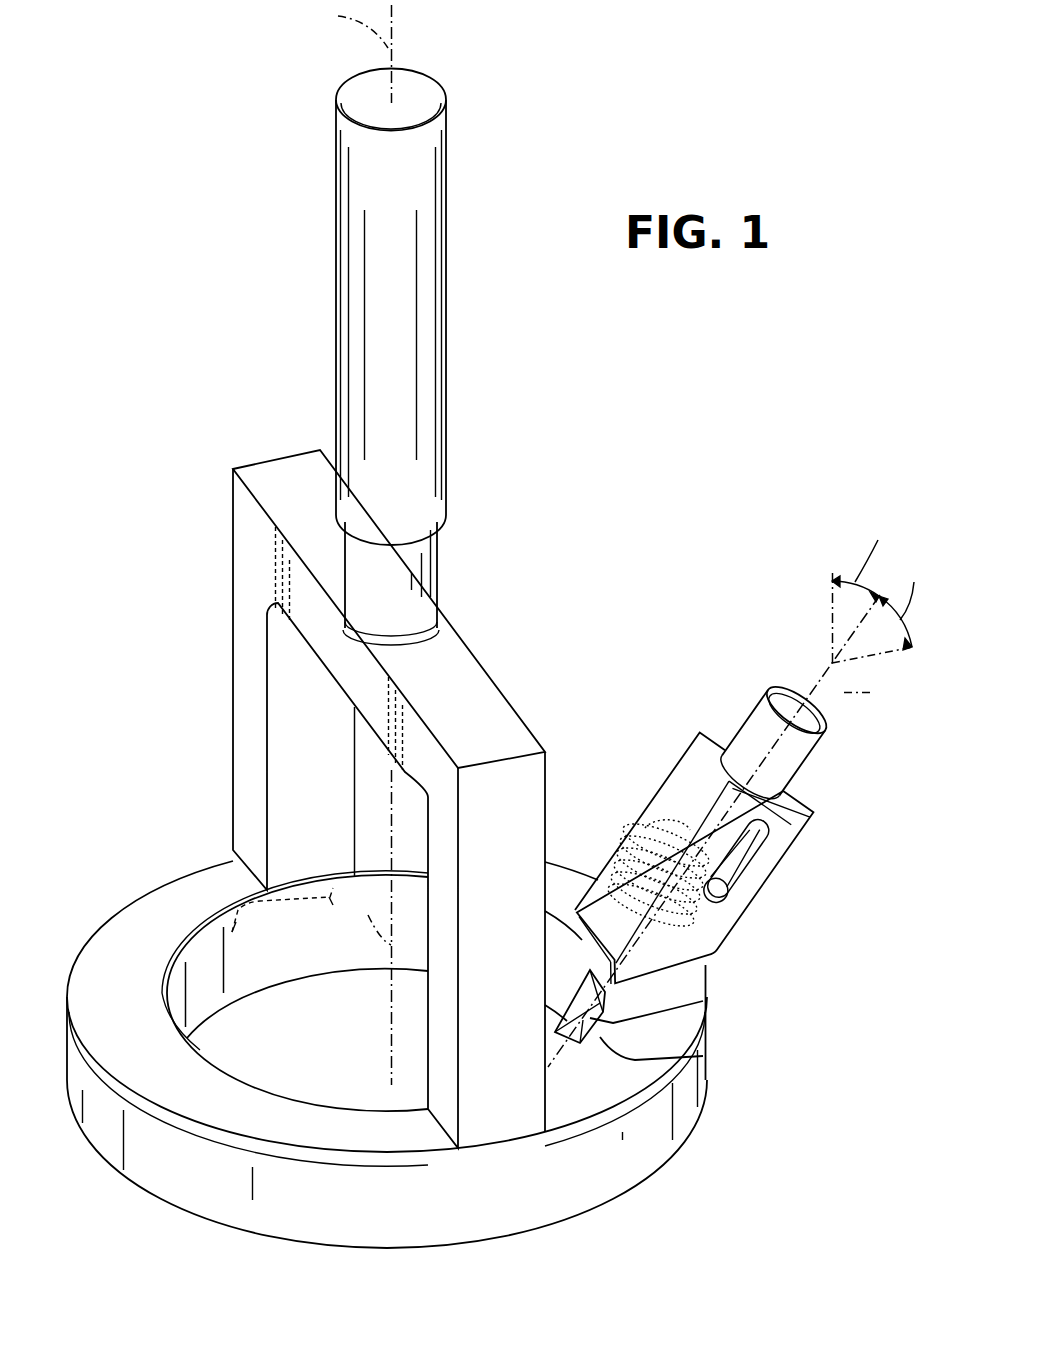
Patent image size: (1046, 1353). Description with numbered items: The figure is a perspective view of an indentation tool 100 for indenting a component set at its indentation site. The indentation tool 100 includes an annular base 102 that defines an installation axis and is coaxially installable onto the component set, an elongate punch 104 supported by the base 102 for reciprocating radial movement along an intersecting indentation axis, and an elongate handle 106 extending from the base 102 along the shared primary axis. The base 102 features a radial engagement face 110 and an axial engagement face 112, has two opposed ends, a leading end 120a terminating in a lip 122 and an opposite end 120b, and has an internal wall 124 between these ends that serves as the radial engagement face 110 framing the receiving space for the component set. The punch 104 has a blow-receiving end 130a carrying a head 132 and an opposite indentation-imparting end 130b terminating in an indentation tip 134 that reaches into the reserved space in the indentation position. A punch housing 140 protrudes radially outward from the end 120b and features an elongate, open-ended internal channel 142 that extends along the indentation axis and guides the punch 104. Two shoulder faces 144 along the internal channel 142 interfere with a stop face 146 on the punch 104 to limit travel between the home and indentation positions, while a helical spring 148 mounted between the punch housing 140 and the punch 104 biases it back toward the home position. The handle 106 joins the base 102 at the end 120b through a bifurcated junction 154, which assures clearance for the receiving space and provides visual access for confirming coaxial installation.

The indentation tool 100 is at (341, 182).
The base 102 is at (108, 965).
The punch 104 is at (750, 735).
The handle 106 is at (336, 322).
The radial engagement face 110 is at (222, 982).
The axial engagement face 112 is at (284, 962).
The leading end 120a is at (148, 1190).
The end opposite the leading end 120b is at (100, 945).
The lip 122 is at (312, 968).
The internal wall 124 is at (196, 1010).
The blow-receiving end 130a is at (773, 742).
The indentation-imparting end 130b is at (706, 1003).
The head 132 is at (796, 710).
The indentation tip 134 is at (603, 1055).
The punch housing 140 is at (698, 725).
The internal channel 142 is at (708, 886).
The shoulder faces 144 is at (738, 858).
The stop face 146 is at (734, 864).
The spring 148 is at (640, 860).
The bifurcated junction 154 is at (242, 870).